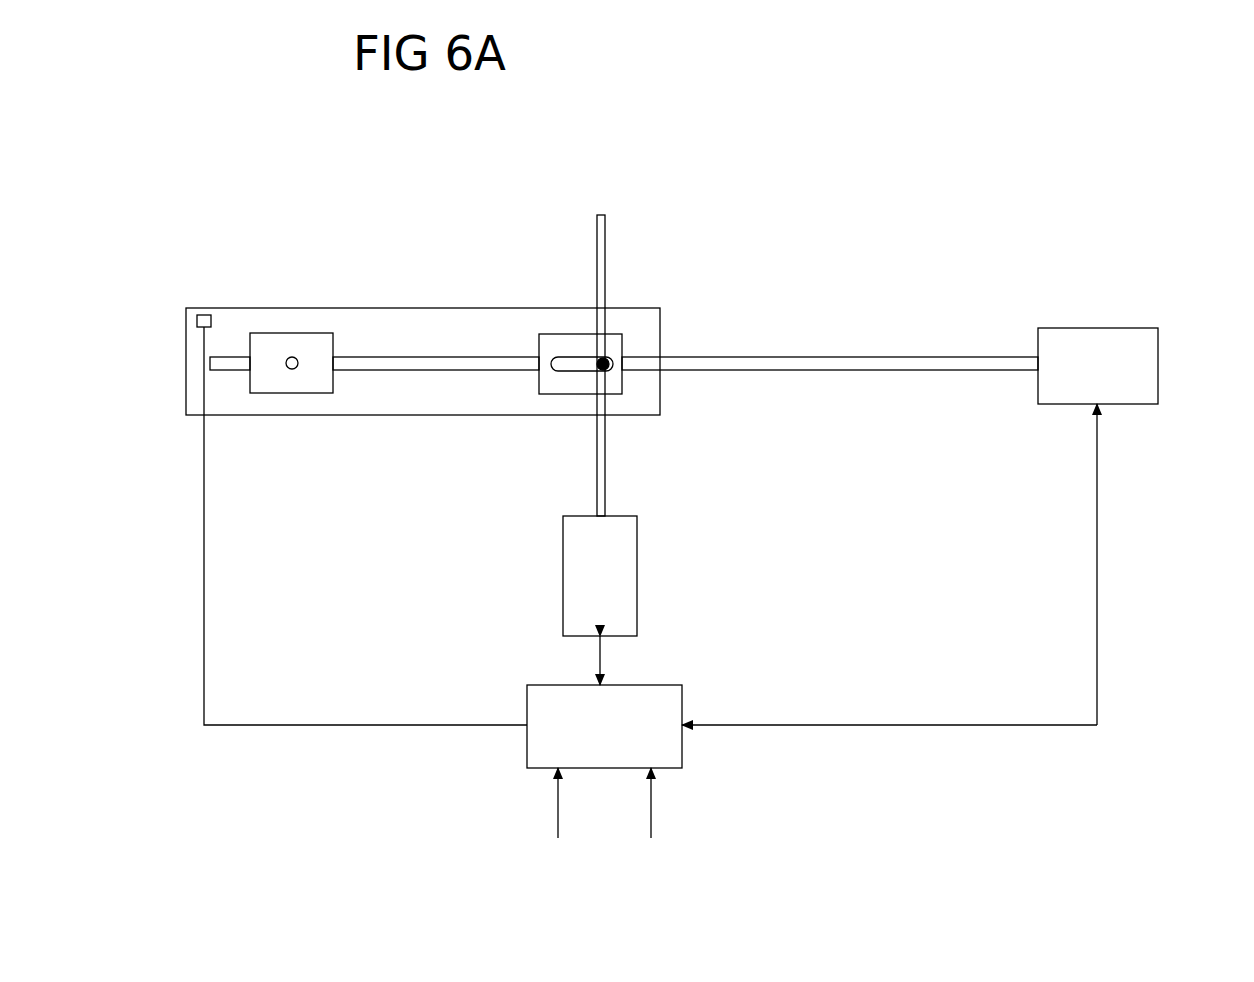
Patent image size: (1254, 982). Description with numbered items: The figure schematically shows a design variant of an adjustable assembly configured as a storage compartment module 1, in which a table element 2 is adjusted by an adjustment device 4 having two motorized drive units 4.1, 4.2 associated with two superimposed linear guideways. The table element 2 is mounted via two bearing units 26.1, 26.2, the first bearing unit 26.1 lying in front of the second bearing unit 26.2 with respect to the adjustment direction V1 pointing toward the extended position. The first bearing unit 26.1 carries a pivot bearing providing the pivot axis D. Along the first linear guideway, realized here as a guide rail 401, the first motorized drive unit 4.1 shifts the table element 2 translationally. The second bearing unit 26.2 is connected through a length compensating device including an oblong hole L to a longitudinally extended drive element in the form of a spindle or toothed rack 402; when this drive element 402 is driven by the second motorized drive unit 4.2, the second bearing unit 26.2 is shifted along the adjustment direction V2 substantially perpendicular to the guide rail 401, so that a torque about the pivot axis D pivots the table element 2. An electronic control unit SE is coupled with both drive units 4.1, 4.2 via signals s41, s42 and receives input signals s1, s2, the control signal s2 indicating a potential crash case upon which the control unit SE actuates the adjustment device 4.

The storage compartment module 1 is at (748, 288).
The table element 2 is at (306, 303).
The adjustment device 4 is at (940, 618).
The first motorized drive unit 4.1 is at (1158, 310).
The second motorized drive unit 4.2 is at (648, 558).
The first bearing unit 26.1 is at (320, 380).
The second bearing unit 26.2 is at (622, 334).
The guide rail 401 is at (920, 360).
The spindle/toothed rack (drive element) 402 is at (598, 238).
The pivot axis D is at (290, 358).
The oblong hole (length compensating device) L is at (553, 369).
The electronic control unit SE is at (604, 726).
The signal s1 is at (575, 803).
The control signal s2 is at (669, 803).
The signal s41 is at (918, 564).
The signal s42 is at (629, 660).
The adjustment direction V1 is at (846, 394).
The adjustment direction V2 is at (621, 232).